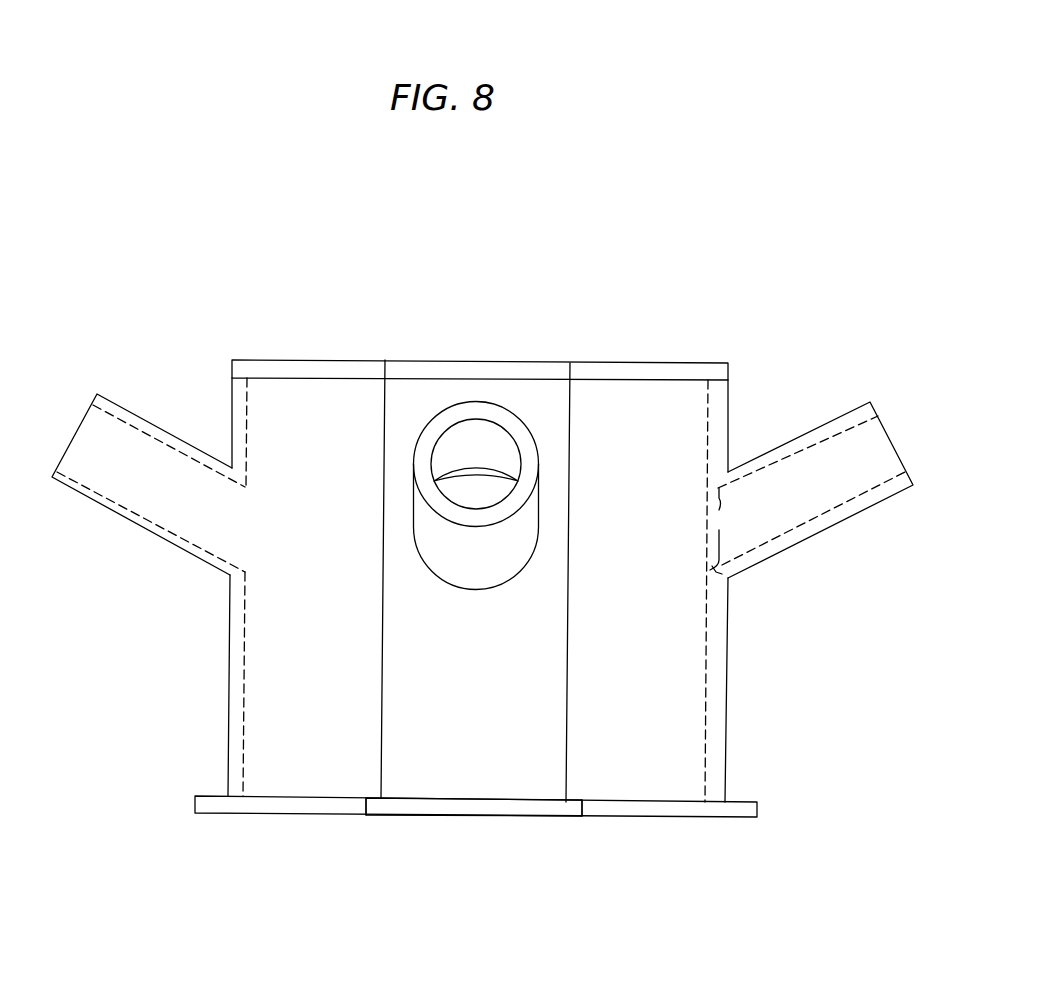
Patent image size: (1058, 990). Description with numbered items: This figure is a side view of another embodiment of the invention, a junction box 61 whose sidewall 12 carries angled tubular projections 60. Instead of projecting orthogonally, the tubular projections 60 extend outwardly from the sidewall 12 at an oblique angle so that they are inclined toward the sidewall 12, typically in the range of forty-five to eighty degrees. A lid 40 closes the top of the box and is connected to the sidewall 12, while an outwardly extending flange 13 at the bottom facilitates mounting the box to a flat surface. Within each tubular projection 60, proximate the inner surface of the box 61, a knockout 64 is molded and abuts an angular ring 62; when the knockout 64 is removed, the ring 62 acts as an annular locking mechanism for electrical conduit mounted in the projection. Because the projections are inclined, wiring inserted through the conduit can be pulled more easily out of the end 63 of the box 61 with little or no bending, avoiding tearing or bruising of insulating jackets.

The junction box 61 is at (198, 342).
The lid 40 is at (480, 362).
The sidewall 12 is at (728, 428).
The angled tubular projections 60 is at (818, 535).
The knockouts 64 is at (720, 532).
The angular rings 62 is at (712, 572).
The flange 13 is at (713, 819).
The end 63 is at (498, 808).